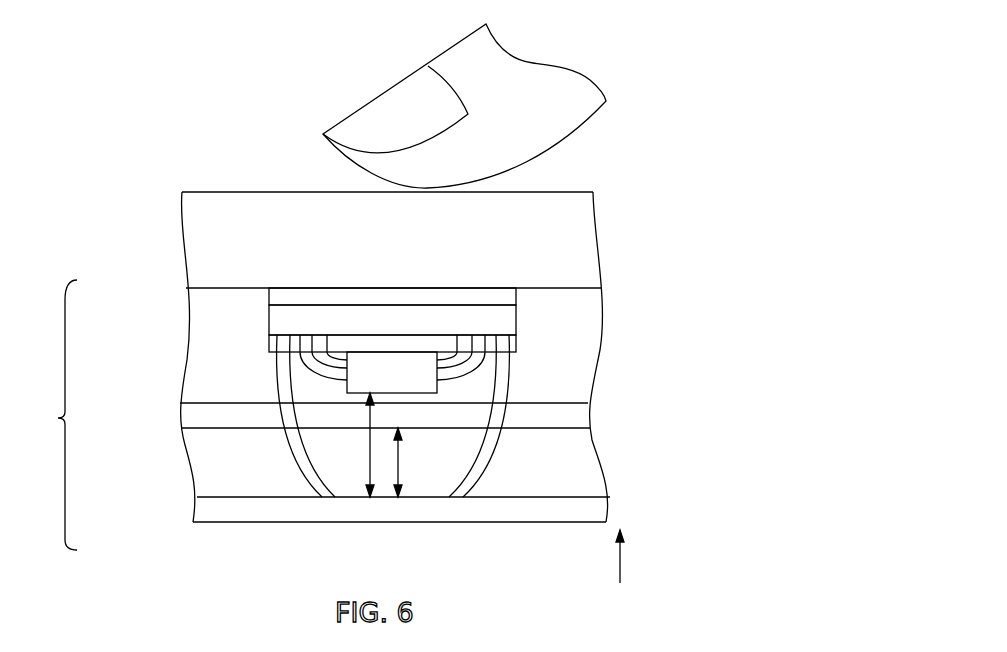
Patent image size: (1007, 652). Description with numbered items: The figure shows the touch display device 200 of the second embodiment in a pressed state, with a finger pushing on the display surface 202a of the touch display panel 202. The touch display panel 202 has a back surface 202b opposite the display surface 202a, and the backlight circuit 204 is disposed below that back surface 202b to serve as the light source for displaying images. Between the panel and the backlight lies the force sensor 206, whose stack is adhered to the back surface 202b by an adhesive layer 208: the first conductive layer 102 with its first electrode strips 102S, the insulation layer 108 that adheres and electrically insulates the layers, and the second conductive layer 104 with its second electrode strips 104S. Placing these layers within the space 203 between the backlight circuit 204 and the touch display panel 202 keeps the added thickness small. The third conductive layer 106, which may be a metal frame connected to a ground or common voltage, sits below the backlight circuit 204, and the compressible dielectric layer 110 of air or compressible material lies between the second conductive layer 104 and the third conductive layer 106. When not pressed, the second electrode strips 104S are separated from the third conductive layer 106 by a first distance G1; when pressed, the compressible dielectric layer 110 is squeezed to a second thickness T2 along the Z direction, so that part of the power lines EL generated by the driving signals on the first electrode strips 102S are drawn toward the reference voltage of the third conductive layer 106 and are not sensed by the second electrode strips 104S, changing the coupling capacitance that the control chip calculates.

The touch display device 200 is at (150, 142).
The touch display panel 202 is at (432, 242).
The display surface 202a is at (562, 192).
The back surface 202b is at (562, 288).
The space 203 is at (572, 355).
The backlight circuit 204 is at (567, 417).
The force sensor 206 is at (58, 418).
The adhesive layer 208 is at (282, 297).
The first conductive layer 102 is at (282, 323).
The first electrode strips 102S is at (300, 323).
The second conductive layer 104 is at (347, 380).
The second electrode strips 104S is at (253, 374).
The third conductive layer 106 is at (225, 498).
The insulation layer 108 is at (269, 344).
The compressible dielectric layer 110 is at (225, 443).
The power lines EL is at (508, 382).
The first distance G1 is at (356, 445).
The second thickness T2 is at (409, 462).
The Z direction axis Z is at (627, 558).